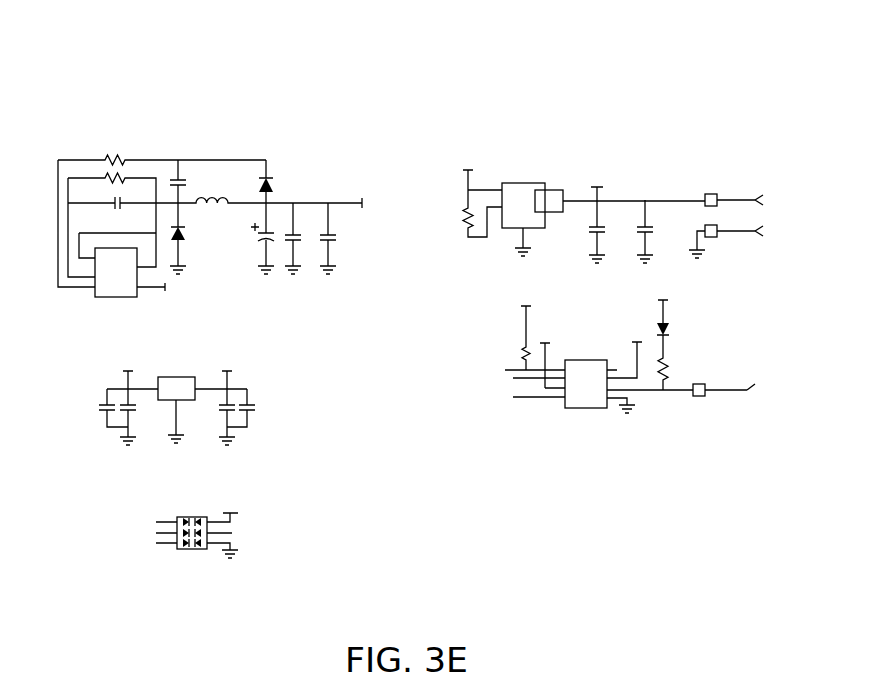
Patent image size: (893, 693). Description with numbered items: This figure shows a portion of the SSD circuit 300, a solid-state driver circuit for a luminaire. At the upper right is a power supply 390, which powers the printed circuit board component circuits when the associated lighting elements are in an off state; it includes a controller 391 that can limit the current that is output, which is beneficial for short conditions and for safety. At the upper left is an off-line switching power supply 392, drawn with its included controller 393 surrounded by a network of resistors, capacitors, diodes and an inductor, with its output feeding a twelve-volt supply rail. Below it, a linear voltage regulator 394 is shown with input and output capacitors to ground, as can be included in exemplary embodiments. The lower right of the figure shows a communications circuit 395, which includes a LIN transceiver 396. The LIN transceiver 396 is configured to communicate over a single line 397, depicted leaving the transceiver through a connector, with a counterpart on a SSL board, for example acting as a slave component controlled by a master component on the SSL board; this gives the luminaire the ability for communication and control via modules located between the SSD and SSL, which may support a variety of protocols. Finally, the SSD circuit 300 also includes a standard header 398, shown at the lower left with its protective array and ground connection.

The SSD circuit 300 is at (102, 45).
The power supply 390 is at (640, 142).
The controller 391 is at (523, 183).
The off-line switching power supply 392 is at (262, 137).
The controller 393 is at (145, 296).
The linear voltage regulator 394 is at (290, 390).
The communications circuit 395 is at (512, 438).
The LIN transceiver 396 is at (625, 458).
The single line 397 is at (747, 390).
The standard header 398 is at (266, 534).